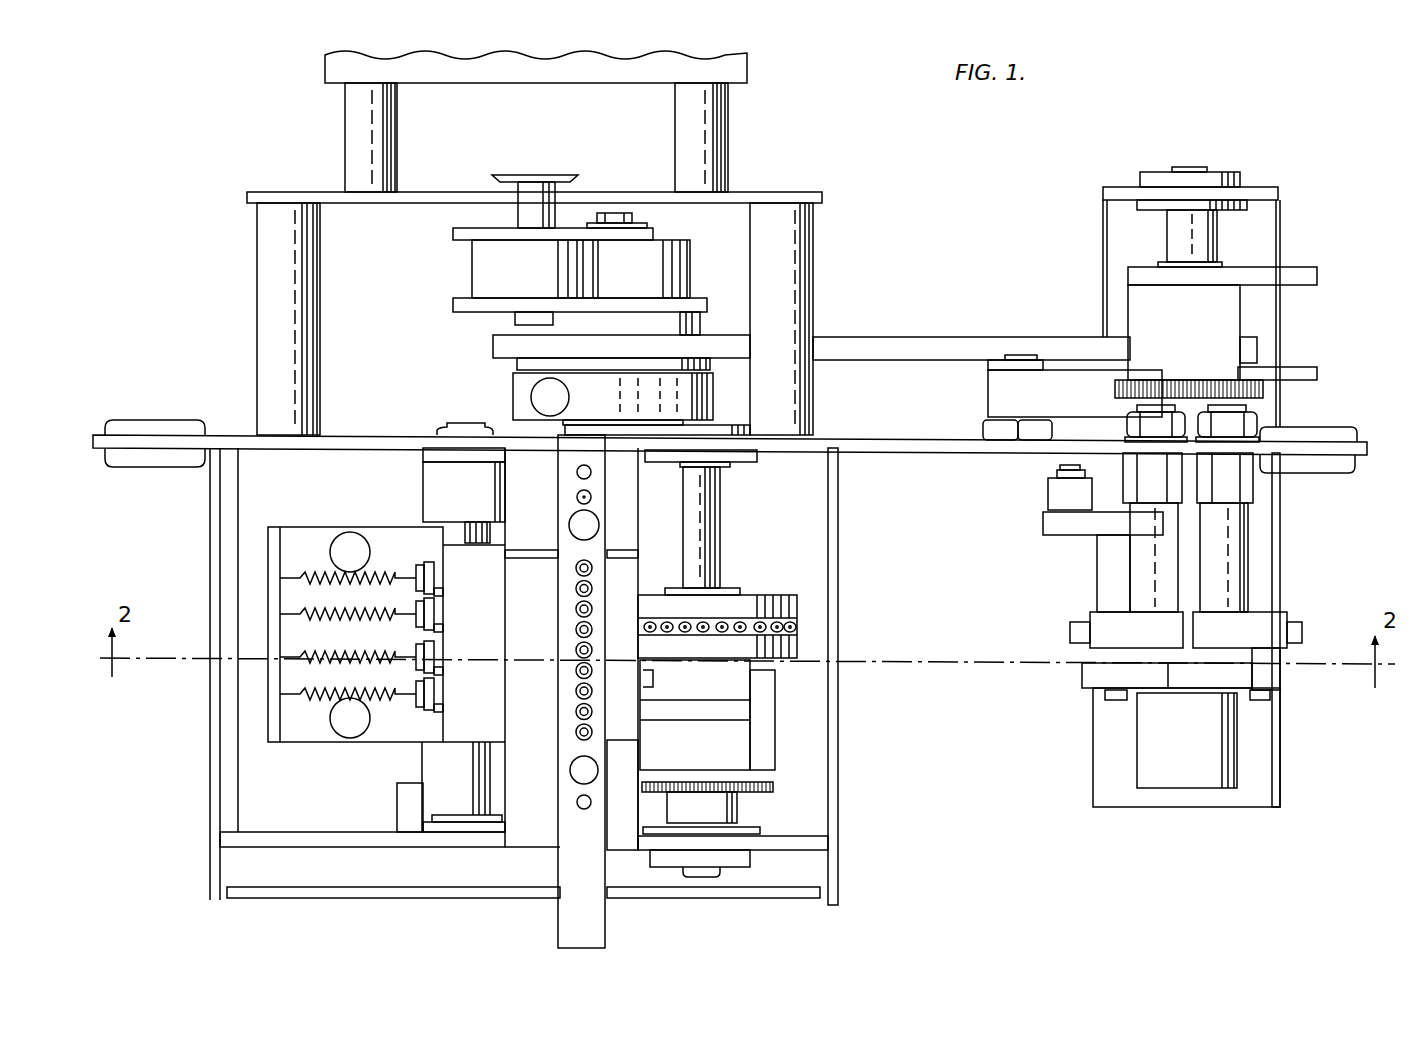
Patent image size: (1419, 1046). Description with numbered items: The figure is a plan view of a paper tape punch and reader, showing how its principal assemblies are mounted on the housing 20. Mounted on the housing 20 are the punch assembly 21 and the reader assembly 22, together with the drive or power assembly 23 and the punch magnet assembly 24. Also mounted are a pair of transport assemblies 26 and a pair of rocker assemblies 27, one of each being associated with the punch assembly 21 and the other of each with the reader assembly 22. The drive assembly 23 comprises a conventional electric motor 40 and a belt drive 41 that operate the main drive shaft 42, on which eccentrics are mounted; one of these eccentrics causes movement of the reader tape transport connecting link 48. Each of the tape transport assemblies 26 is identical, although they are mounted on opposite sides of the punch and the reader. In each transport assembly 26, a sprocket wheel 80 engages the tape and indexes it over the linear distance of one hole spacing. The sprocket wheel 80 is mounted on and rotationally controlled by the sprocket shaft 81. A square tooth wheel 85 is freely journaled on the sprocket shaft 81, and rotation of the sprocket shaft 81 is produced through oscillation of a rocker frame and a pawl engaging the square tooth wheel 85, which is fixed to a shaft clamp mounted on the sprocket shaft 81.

The housing 20 is at (1364, 446).
The punch assembly 21 is at (844, 884).
The reader assembly 22 is at (1284, 570).
The drive or power assembly 23 is at (738, 94).
The punch magnet assembly 24 is at (320, 793).
The transport assemblies 26 is at (748, 812).
The rocker assemblies 27 is at (777, 736).
The electric motor 40 is at (752, 73).
The belt drive 41 is at (466, 262).
The main drive shaft 42 is at (628, 213).
The reader tape transport connecting link 48 is at (905, 340).
The sprocket wheel 80 is at (799, 627).
The sprocket shaft 81 is at (712, 527).
The square tooth wheel 85 is at (775, 787).